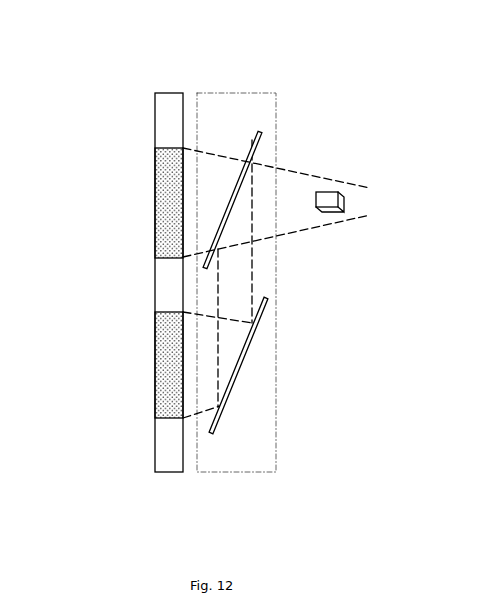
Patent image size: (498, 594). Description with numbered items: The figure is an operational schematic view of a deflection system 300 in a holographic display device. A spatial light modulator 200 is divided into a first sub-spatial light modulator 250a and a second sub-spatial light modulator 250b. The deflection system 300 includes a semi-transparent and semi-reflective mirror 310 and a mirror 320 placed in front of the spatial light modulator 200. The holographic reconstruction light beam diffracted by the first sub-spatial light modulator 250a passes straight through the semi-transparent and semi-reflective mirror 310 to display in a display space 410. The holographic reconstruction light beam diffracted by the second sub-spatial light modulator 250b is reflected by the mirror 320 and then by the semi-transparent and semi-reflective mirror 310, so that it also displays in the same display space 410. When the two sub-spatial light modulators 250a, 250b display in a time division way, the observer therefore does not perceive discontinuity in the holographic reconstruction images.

The spatial light modulator 200 is at (168, 120).
The first sub-spatial light modulator 250a is at (155, 213).
The second sub-spatial light modulator 250b is at (155, 367).
The deflection system 300 is at (265, 472).
The semi-transparent and semi-reflective mirror 310 is at (265, 140).
The mirror 320 is at (240, 382).
The display space 410 is at (342, 160).